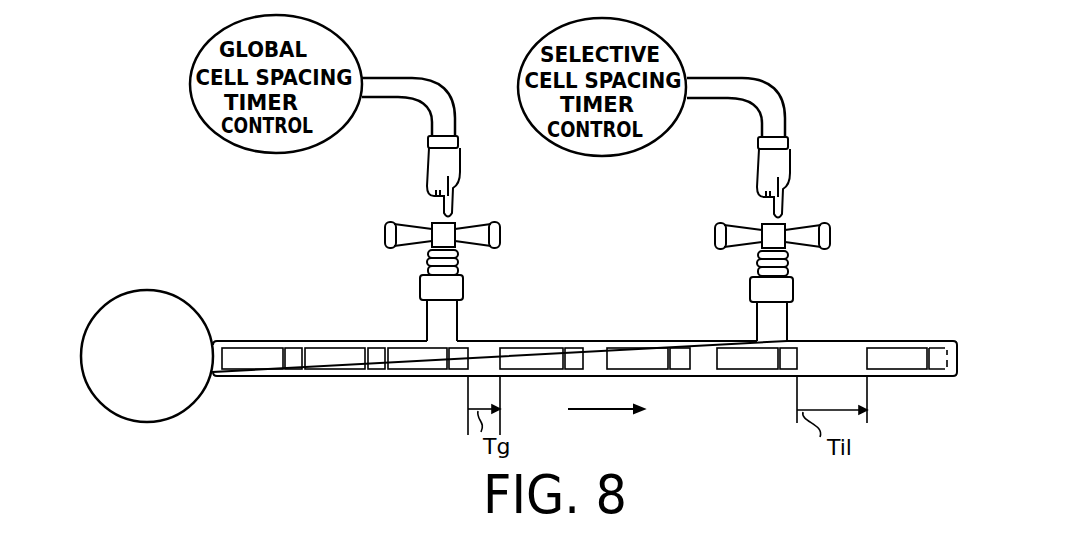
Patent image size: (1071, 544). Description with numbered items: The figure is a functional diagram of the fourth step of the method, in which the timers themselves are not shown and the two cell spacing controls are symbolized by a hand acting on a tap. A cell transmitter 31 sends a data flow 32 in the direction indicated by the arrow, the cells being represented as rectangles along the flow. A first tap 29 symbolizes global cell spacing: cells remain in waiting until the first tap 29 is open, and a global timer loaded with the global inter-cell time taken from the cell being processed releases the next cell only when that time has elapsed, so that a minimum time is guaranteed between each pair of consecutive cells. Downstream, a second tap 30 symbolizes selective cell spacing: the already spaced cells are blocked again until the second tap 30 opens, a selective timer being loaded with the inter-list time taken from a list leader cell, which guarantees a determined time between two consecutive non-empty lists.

The first tap 29 is at (500, 238).
The second tap 30 is at (830, 239).
The cell transmitter 31 is at (152, 290).
The data flow 32 is at (258, 340).